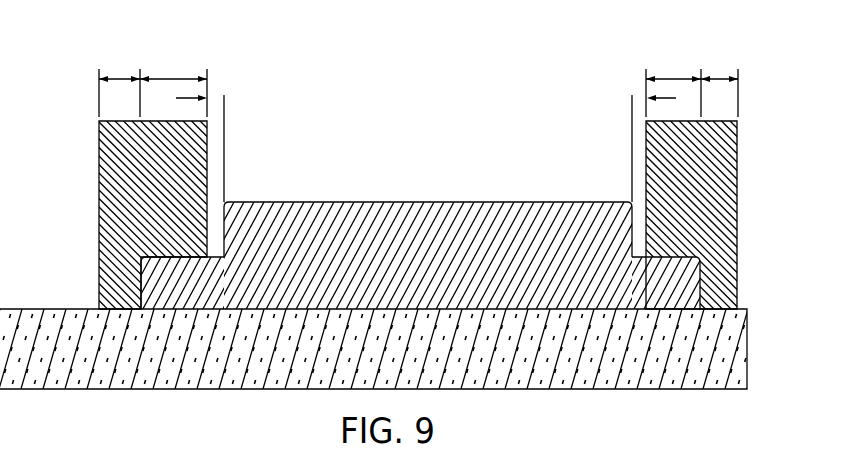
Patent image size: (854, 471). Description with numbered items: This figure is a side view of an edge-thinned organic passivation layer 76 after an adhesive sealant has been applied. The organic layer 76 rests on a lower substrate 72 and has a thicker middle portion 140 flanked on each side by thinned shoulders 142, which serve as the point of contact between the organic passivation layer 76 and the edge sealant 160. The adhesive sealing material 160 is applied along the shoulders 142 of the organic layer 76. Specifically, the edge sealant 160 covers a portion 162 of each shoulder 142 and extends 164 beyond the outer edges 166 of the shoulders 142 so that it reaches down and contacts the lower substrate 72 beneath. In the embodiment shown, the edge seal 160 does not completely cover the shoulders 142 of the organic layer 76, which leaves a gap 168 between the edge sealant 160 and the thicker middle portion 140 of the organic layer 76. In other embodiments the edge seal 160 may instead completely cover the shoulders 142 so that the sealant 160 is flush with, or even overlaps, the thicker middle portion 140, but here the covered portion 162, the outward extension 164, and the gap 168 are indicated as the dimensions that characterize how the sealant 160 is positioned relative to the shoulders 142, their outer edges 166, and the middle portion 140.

The lower substrate 72 is at (515, 389).
The organic passivation layer 76 is at (343, 181).
The thicker middle portion 140 is at (407, 202).
The shoulders 142 is at (143, 259).
The edge sealant 160 is at (99, 162).
The portion 162 is at (173, 77).
The extension 164 is at (120, 77).
The outer edges 166 is at (146, 262).
The gap 168 is at (233, 98).